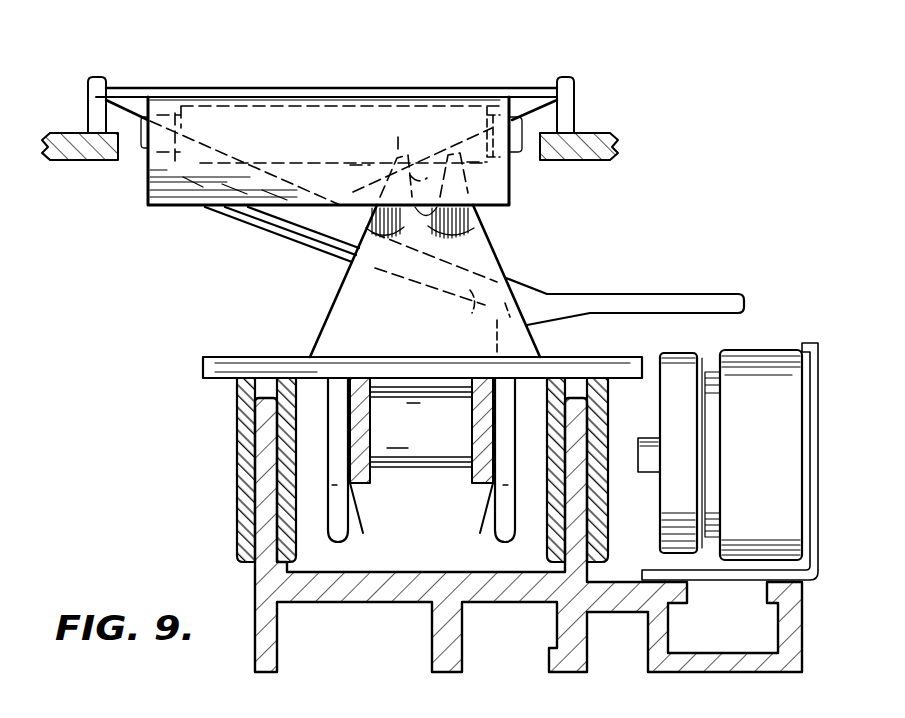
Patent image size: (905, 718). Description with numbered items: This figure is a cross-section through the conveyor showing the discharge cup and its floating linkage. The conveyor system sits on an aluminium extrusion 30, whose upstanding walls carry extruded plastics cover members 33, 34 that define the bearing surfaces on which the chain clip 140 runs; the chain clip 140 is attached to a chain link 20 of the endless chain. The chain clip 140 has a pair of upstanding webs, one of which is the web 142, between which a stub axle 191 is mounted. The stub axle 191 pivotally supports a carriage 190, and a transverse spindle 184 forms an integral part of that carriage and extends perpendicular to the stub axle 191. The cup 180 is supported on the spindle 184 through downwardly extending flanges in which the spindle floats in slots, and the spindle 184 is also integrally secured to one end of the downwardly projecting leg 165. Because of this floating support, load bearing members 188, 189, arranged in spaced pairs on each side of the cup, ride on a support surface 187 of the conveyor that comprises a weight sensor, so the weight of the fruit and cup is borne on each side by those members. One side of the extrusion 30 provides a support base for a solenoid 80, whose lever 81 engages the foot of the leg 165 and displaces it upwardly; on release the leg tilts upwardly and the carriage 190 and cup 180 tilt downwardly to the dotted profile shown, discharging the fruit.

The chain link 20 is at (423, 449).
The aluminium extrusion 30 is at (404, 587).
The cover member 33 is at (238, 458).
The cover member 34 is at (557, 493).
The solenoid 80 is at (777, 418).
The lever 81 is at (683, 470).
The chain clip 140 is at (218, 353).
The upstanding web 142 is at (366, 305).
The flexible leg 165 is at (560, 300).
The cup 180 is at (301, 88).
The transverse spindle 184 is at (498, 110).
The support surface 187 is at (83, 153).
The load bearing member 188 is at (87, 113).
The load bearing member 189 is at (573, 110).
The carriage 190 is at (205, 122).
The stub axle 191 is at (477, 242).